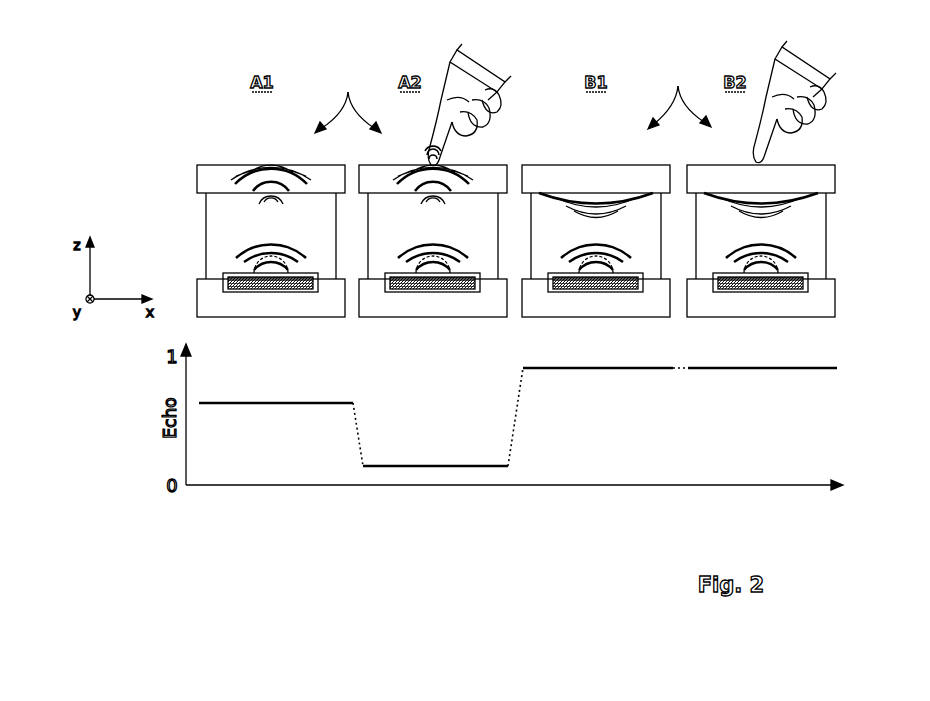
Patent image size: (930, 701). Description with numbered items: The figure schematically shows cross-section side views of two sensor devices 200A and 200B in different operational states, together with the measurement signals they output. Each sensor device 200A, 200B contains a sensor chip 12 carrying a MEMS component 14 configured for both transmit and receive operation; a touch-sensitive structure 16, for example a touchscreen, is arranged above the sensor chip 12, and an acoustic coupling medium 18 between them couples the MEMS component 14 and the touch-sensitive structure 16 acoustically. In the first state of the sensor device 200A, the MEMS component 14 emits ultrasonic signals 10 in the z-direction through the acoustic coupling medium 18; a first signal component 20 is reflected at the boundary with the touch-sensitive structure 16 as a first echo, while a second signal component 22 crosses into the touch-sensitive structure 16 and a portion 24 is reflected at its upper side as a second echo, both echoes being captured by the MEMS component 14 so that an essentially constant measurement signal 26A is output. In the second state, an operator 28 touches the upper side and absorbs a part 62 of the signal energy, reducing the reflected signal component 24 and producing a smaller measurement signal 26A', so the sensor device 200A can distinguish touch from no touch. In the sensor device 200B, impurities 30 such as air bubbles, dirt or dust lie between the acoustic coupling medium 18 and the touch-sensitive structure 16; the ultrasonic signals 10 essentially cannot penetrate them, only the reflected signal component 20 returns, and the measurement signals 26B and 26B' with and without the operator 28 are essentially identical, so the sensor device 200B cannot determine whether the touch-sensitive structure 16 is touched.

The ultrasonic signals 10 is at (410, 249).
The sensor chip 12 is at (201, 311).
The MEMS component 14 is at (407, 292).
The touch-sensitive structure 16 is at (205, 173).
The acoustic coupling medium 18 is at (215, 243).
The first signal component 20 is at (420, 205).
The second signal component 22 is at (316, 173).
The reflected signal component 24 is at (252, 166).
The measurement signal 26A is at (281, 467).
The measurement signal 26A' is at (443, 447).
The measurement signal 26B is at (605, 446).
The measurement signal 26B' is at (762, 446).
The operator 28 is at (460, 70).
The impurities 30 is at (740, 193).
The part of the signal energy 62 is at (444, 153).
The sensor device 200A is at (348, 99).
The sensor device 200B is at (679, 96).